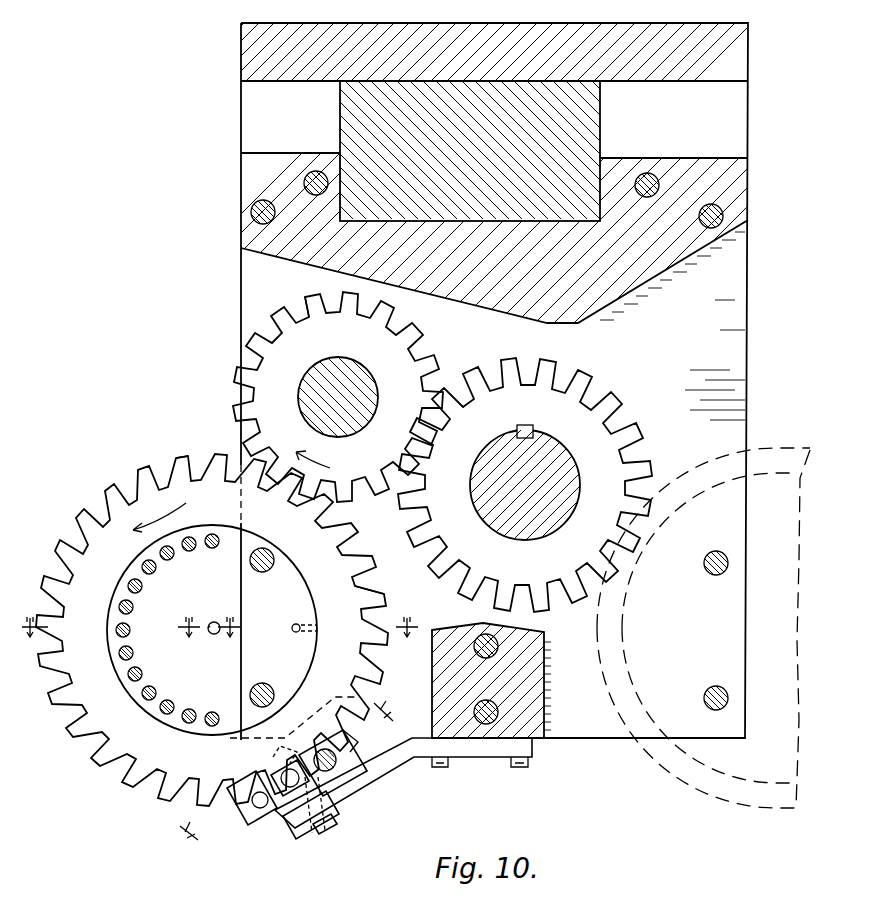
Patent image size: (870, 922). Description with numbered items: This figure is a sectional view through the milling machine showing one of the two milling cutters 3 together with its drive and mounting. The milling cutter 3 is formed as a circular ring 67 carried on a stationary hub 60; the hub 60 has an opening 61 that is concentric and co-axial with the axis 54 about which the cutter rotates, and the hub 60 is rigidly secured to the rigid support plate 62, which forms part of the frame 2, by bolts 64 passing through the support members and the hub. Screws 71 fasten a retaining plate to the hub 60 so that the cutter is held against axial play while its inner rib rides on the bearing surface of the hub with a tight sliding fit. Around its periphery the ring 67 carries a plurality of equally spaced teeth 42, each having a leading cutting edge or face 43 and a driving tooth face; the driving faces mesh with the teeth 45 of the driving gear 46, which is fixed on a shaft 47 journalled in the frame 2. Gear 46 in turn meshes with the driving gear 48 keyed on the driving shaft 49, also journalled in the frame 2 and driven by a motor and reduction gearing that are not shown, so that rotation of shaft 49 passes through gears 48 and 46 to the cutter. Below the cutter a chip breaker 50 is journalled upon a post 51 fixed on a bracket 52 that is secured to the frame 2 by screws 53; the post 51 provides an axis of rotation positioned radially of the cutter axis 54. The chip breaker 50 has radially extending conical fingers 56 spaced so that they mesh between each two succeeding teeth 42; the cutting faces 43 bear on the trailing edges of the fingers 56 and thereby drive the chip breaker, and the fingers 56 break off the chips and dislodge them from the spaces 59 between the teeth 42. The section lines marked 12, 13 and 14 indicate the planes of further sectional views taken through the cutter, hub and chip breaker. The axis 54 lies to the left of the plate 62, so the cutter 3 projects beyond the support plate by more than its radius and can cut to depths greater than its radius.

The frame 2 is at (243, 243).
The milling cutter 3 is at (112, 752).
The section line 12 is at (291, 780).
The section line 13 is at (132, 642).
The section line 14 is at (296, 642).
The teeth 42 is at (152, 462).
The cutting edge or face 43 is at (352, 527).
The teeth 45 is at (277, 312).
The driving gear 46 is at (323, 389).
The shaft 47 is at (366, 388).
The driving gear 48 is at (525, 484).
The driving shaft 49 is at (570, 463).
The chip breaker 50 is at (262, 826).
The post 51 is at (338, 826).
The bracket 52 is at (402, 765).
The screws 53 is at (513, 767).
The axis 54 is at (218, 622).
The fingers 56 is at (256, 810).
The spaces 59 is at (138, 470).
The stationary hub 60 is at (226, 630).
The opening 61 is at (208, 622).
The support plate 62 is at (745, 252).
The bolts 64 is at (272, 557).
The circular ring 67 is at (96, 710).
The screws 71 is at (131, 652).